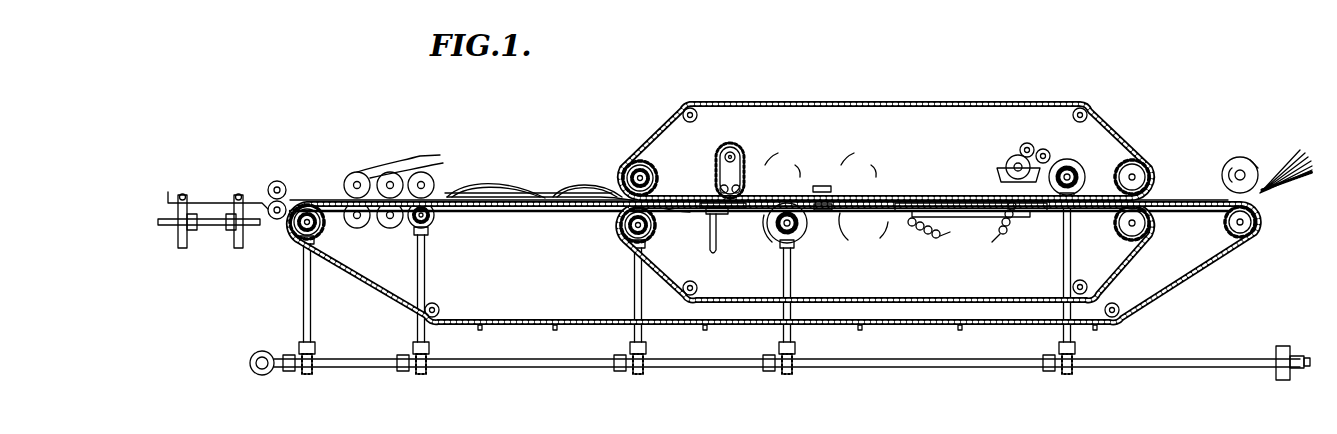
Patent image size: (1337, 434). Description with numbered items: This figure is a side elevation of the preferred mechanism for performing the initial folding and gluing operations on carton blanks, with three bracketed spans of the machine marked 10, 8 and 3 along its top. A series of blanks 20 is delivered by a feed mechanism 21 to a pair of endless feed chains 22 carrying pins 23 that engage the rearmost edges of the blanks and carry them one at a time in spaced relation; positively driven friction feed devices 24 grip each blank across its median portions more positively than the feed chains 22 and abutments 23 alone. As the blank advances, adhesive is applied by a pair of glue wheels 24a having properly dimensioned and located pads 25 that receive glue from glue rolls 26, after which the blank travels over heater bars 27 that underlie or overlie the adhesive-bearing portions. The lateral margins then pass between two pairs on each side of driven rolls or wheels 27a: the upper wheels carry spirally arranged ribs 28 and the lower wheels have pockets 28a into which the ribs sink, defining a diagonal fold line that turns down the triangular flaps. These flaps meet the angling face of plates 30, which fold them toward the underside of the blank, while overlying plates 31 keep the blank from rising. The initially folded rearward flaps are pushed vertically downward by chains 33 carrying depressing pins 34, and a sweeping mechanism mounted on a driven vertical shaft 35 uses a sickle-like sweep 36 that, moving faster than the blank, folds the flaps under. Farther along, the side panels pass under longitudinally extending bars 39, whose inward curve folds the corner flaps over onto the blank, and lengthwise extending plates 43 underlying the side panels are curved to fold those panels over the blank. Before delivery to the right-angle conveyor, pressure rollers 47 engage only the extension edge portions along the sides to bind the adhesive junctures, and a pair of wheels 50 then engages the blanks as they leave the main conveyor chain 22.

The feeding section 10 is at (152, 118).
The forming section 8 is at (683, 120).
The sealing section 3 is at (691, 133).
The wheels 50 is at (282, 180).
The pressure rollers 47 is at (440, 160).
The lengthwise extending plates 43 is at (497, 181).
The longitudinally extending bars 39 is at (580, 181).
The chains 33 is at (716, 178).
The depressing pins 34 is at (742, 168).
The overlying plates 31 is at (818, 184).
The ribs 28 is at (840, 160).
The pockets 28a is at (768, 244).
The plates 30 is at (824, 213).
The sickle-like sweep 36 is at (734, 214).
The driven vertical shaft 35 is at (706, 250).
The driven rolls or wheels 27a is at (886, 182).
The bars 27 is at (952, 213).
The glue rolls 26 is at (1022, 146).
The pads 25 is at (1054, 142).
The glue wheels 24a is at (1080, 161).
The friction feed devices 24 is at (1140, 150).
The feed mechanism 21 is at (1240, 152).
The blanks 20 is at (1276, 152).
The pins 23 is at (360, 284).
The endless feed chains 22 is at (519, 318).